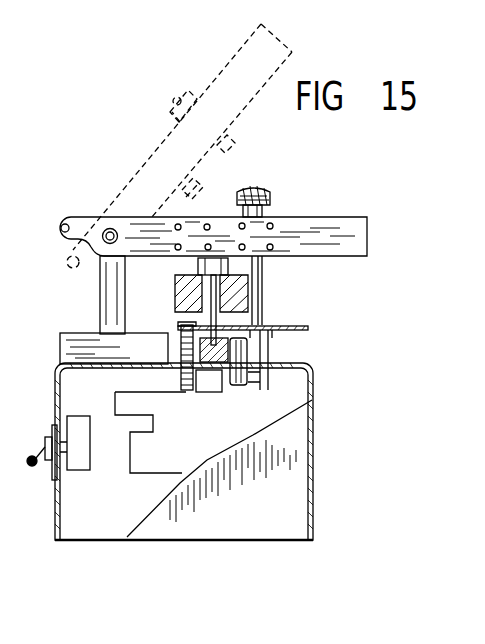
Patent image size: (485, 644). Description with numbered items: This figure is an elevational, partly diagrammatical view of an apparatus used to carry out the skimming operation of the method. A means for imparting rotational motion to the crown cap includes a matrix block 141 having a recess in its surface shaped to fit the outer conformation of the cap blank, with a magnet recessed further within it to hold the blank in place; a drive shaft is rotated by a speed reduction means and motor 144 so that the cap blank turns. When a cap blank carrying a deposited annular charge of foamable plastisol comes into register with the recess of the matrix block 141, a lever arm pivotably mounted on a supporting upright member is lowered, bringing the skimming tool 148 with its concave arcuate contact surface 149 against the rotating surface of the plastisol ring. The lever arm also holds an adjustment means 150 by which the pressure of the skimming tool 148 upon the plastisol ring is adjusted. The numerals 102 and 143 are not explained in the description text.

The skimming tool 148 is at (178, 188).
The concave arcuate shape contact surface 149 is at (188, 272).
The adjustment means 150 is at (262, 196).
The arm bar 102 is at (236, 268).
The matrix block 141 is at (250, 282).
The clamp block 143 is at (212, 306).
The speed reduction means and motor 144 is at (292, 402).